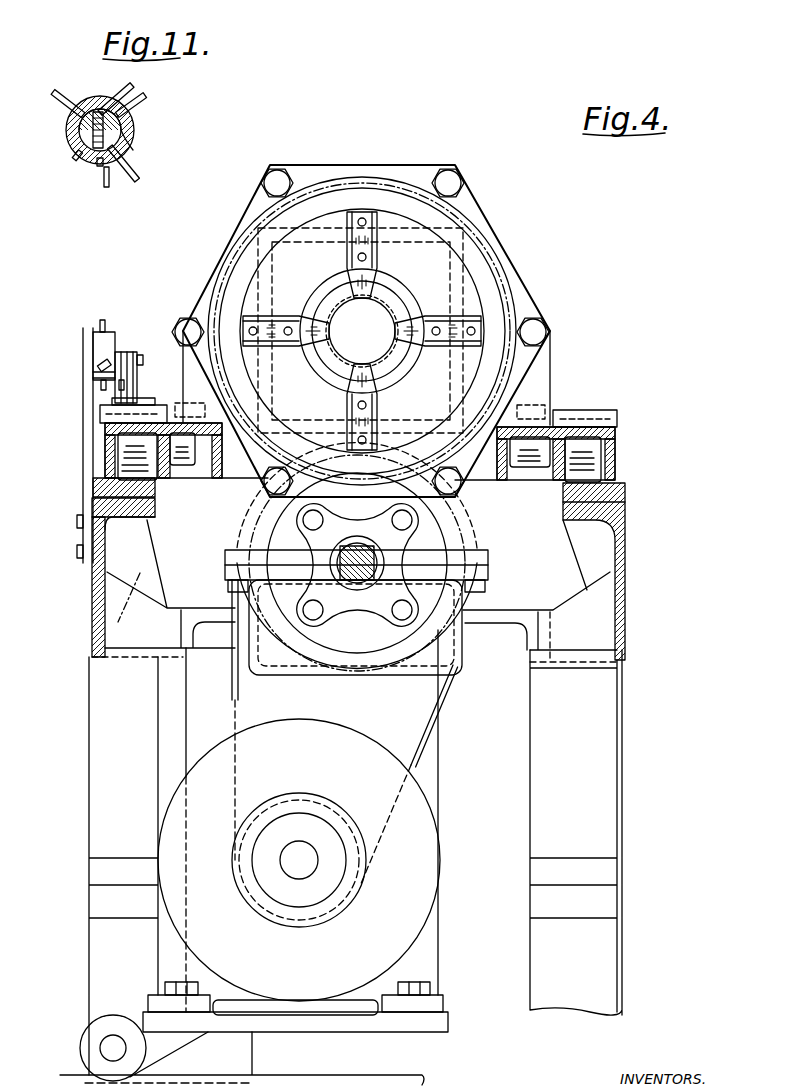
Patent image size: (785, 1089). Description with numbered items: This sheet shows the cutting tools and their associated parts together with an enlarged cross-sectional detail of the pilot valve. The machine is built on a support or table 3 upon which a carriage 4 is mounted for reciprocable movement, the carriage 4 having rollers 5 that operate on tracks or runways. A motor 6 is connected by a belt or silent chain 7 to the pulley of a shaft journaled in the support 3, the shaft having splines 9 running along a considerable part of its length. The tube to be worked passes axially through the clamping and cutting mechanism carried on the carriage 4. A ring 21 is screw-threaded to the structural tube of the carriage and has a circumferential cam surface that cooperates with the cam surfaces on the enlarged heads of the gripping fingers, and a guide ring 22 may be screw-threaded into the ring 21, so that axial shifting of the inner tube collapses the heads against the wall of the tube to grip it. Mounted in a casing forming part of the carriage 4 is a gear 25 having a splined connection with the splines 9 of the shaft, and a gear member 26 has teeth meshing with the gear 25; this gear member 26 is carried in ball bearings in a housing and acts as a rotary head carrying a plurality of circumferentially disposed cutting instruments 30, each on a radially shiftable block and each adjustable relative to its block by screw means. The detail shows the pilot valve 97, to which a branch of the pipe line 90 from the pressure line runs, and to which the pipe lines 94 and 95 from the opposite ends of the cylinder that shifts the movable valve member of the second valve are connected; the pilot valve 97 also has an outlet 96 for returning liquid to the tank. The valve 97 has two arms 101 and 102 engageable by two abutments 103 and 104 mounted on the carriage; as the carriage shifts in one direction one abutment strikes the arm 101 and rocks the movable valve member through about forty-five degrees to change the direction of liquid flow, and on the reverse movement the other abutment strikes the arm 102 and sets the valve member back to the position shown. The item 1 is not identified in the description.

In FIG. 4, the chuck 1 is at (397, 353).
In FIG. 4, the support or table 3 is at (97, 583).
In FIG. 4, the carriage 4 is at (105, 447).
In FIG. 4, the rollers 5 is at (120, 460).
In FIG. 4, the motor 6 is at (418, 803).
In FIG. 4, the belt or silent chain 7 is at (425, 722).
In FIG. 4, the splines 9 is at (330, 553).
In FIG. 4, the ring 21 is at (405, 298).
In FIG. 4, the guide ring 22 is at (330, 358).
In FIG. 4, the gear 25 is at (468, 528).
In FIG. 4, the gear member 26 is at (518, 290).
In FIG. 4, the cutting instruments 30 is at (440, 305).
In FIG. 11, the pipe line 90 is at (129, 88).
In FIG. 11, the pipe line 94 is at (136, 170).
In FIG. 11, the pipe line 95 is at (143, 98).
In FIG. 11, the outlet 96 is at (54, 100).
In FIG. 4, the pilot valve 97 is at (108, 338).
In FIG. 11, the pilot valve 97 is at (134, 131).
In FIG. 4, the arm 101 is at (132, 375).
In FIG. 11, the arm 101 is at (74, 158).
In FIG. 4, the arm 102 is at (108, 374).
In FIG. 11, the arm 102 is at (135, 155).
In FIG. 4, the abutment 103 is at (105, 388).
In FIG. 4, the abutment 104 is at (122, 398).
In FIG. 11, the abutment 104 is at (110, 183).